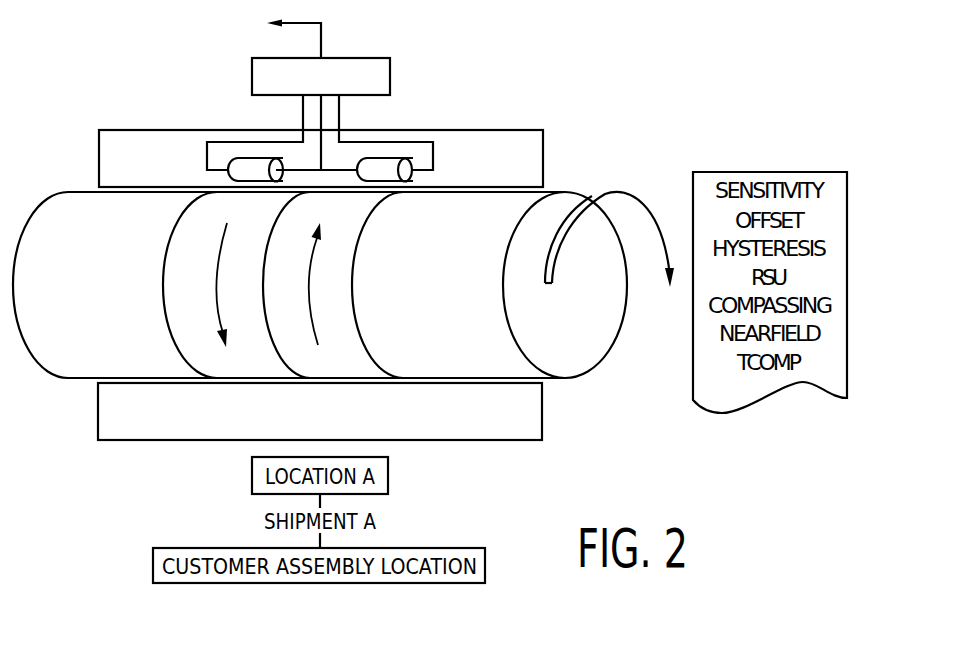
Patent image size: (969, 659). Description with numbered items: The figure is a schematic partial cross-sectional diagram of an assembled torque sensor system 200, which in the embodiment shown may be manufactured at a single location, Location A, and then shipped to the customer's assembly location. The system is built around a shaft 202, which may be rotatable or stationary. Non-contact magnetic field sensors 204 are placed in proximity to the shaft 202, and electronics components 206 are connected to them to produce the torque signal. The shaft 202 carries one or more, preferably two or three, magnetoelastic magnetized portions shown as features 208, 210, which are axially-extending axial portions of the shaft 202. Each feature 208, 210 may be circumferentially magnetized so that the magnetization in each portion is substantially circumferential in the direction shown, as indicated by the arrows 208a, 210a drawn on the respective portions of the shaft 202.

The torque sensor system 200 is at (622, 141).
The shaft 202 is at (50, 203).
The non-contact magnetic field sensors 204 is at (100, 130).
The electronics components 206 is at (423, 69).
The magnetoelastic magnetized portion 208 is at (175, 308).
The magnetization direction arrow 208a is at (218, 239).
The magnetoelastic magnetized portion 210 is at (348, 342).
The magnetization direction arrow 210a is at (310, 260).